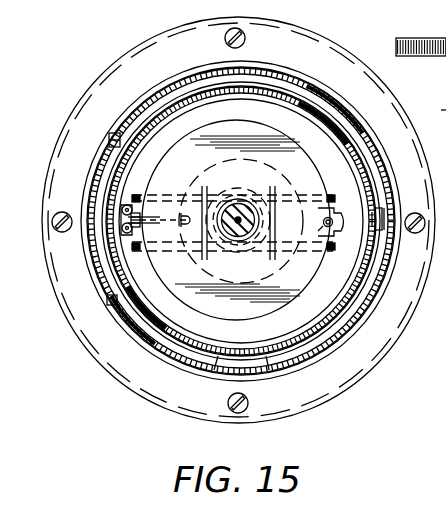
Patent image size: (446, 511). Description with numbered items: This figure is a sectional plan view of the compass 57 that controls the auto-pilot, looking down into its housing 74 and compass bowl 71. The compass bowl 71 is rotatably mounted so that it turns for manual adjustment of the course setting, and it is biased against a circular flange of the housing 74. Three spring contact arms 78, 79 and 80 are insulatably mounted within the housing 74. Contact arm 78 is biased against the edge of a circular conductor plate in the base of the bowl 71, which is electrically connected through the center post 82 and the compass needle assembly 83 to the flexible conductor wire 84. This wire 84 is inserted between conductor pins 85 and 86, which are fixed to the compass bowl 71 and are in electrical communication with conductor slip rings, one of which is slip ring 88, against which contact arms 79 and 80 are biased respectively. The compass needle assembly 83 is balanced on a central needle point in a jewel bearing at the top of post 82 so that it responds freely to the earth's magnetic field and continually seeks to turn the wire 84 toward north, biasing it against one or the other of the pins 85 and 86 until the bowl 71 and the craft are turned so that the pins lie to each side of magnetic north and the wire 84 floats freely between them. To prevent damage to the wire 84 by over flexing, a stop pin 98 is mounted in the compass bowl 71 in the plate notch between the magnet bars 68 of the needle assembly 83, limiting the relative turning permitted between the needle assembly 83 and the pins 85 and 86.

The compass 57 is at (89, 362).
The magnet bars 68 is at (333, 222).
The compass bowl 71 is at (270, 360).
The housing 74 is at (352, 330).
The spring contact arm 78 is at (381, 214).
The spring contact arm 79 is at (112, 140).
The spring contact arm 80 is at (115, 299).
The center post 82 is at (250, 233).
The compass needle assembly 83 is at (249, 176).
The flexible conductor wire 84 is at (138, 212).
The conductor pin 85 is at (124, 231).
The conductor pin 86 is at (123, 209).
The conductor slip ring 88 is at (218, 362).
The stop pin 98 is at (320, 231).